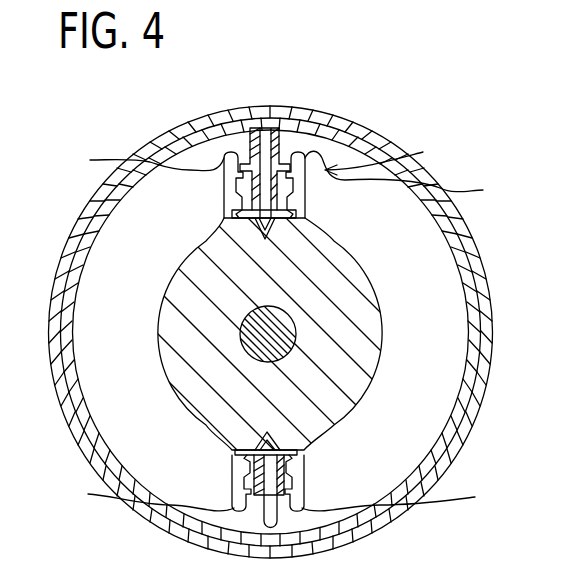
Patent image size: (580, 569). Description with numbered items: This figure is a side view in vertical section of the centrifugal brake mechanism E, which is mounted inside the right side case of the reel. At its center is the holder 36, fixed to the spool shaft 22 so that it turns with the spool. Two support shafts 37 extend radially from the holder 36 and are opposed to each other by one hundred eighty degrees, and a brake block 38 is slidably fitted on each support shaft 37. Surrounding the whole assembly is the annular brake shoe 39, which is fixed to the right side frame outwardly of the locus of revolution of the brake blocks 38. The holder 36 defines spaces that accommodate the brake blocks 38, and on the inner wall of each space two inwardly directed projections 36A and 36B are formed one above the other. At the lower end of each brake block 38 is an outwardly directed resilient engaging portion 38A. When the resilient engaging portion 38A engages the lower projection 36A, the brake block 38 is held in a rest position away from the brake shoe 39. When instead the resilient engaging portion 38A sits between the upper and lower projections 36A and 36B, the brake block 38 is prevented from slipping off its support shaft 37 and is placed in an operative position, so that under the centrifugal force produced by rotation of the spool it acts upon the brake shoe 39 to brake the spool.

The spool shaft 22 is at (245, 338).
The holder 36 is at (362, 382).
The lower projection 36A is at (224, 184).
The upper projection 36B is at (284, 328).
The support shaft 37 is at (250, 133).
The brake block 38 is at (281, 131).
The resilient engaging portion 38A is at (267, 432).
The annular brake shoe 39 is at (449, 233).
The centrifugal brake mechanism E is at (387, 154).